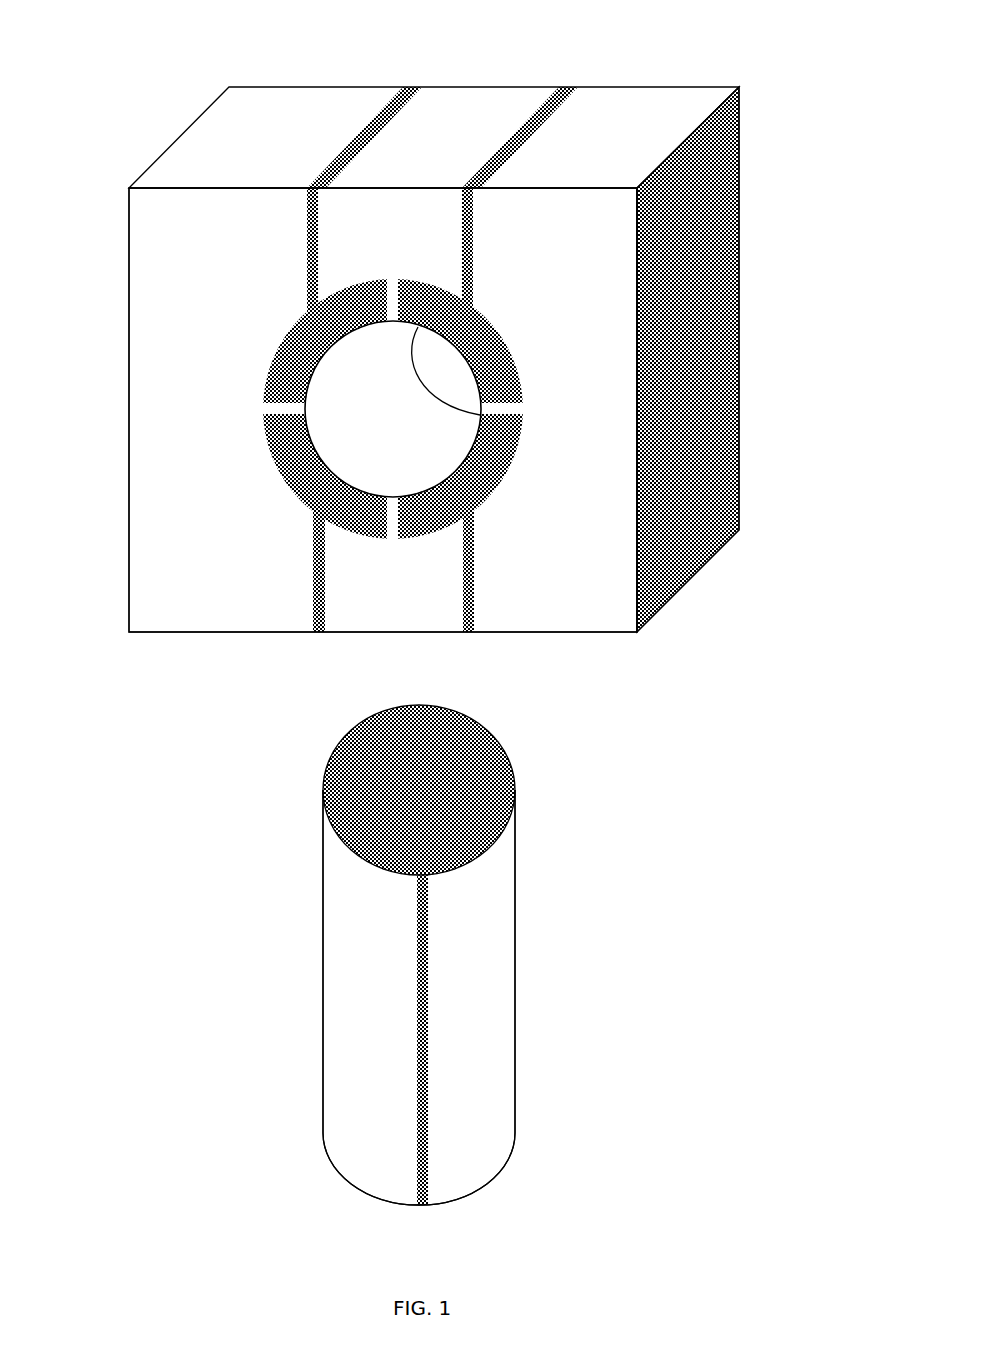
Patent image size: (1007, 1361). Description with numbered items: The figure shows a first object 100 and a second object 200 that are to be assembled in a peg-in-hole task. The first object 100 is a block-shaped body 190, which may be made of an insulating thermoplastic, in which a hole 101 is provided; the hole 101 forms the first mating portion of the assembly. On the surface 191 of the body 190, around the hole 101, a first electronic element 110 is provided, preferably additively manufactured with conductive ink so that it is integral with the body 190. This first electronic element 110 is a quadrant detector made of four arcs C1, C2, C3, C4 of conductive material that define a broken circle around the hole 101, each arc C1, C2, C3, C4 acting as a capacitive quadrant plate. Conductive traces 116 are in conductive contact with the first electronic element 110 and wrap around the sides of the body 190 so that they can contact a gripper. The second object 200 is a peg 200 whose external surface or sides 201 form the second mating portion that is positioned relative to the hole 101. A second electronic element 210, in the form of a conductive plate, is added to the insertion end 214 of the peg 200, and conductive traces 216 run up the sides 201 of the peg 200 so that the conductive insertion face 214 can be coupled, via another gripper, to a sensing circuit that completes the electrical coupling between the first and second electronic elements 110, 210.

The first object 100 is at (675, 58).
The hole 101 is at (325, 350).
The first electronic element 110 is at (429, 401).
The conductive traces 116 is at (513, 138).
The body 190 is at (712, 365).
The surface 191 is at (578, 463).
The capacitive quadrant plate C1 is at (287, 352).
The capacitive quadrant plate C2 is at (285, 468).
The capacitive quadrant plate C3 is at (480, 477).
The capacitive quadrant plate C4 is at (480, 332).
The peg 200 is at (558, 905).
The second mating portion 201 is at (365, 982).
The second electronic element 210 is at (375, 788).
The end of the peg 214 is at (493, 767).
The conductive traces 216 is at (418, 925).